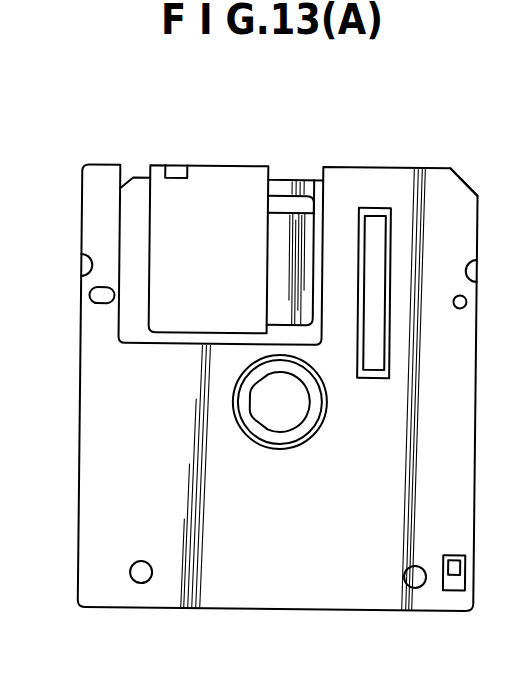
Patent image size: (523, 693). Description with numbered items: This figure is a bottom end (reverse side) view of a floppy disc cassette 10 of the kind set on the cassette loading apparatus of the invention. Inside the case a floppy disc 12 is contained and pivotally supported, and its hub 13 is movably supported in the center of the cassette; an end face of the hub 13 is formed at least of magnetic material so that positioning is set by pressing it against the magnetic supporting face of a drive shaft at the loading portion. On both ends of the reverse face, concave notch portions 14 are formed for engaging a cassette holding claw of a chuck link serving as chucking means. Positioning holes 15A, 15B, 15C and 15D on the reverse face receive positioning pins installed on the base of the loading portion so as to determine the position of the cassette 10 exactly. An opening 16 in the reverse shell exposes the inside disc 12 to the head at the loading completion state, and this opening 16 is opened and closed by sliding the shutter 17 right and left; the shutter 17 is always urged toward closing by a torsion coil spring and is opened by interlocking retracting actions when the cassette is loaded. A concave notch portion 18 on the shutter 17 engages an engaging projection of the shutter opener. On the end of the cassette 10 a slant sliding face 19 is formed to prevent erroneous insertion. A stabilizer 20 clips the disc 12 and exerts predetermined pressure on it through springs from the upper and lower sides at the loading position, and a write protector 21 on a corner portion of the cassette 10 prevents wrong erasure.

The floppy disc cassette 10 is at (246, 614).
The floppy disc 12 is at (273, 226).
The hub 13 is at (283, 418).
The concave portion 14 is at (82, 266).
The positioning hole 15A is at (468, 305).
The positioning hole 15B is at (97, 294).
The positioning hole 15C is at (141, 583).
The positioning hole 15D is at (418, 588).
The opening 16 is at (305, 205).
The shutter 17 is at (223, 187).
The concave portion 18 is at (177, 170).
The slant face 19 is at (465, 183).
The stabilizer 20 is at (373, 352).
The write protector 21 is at (457, 568).